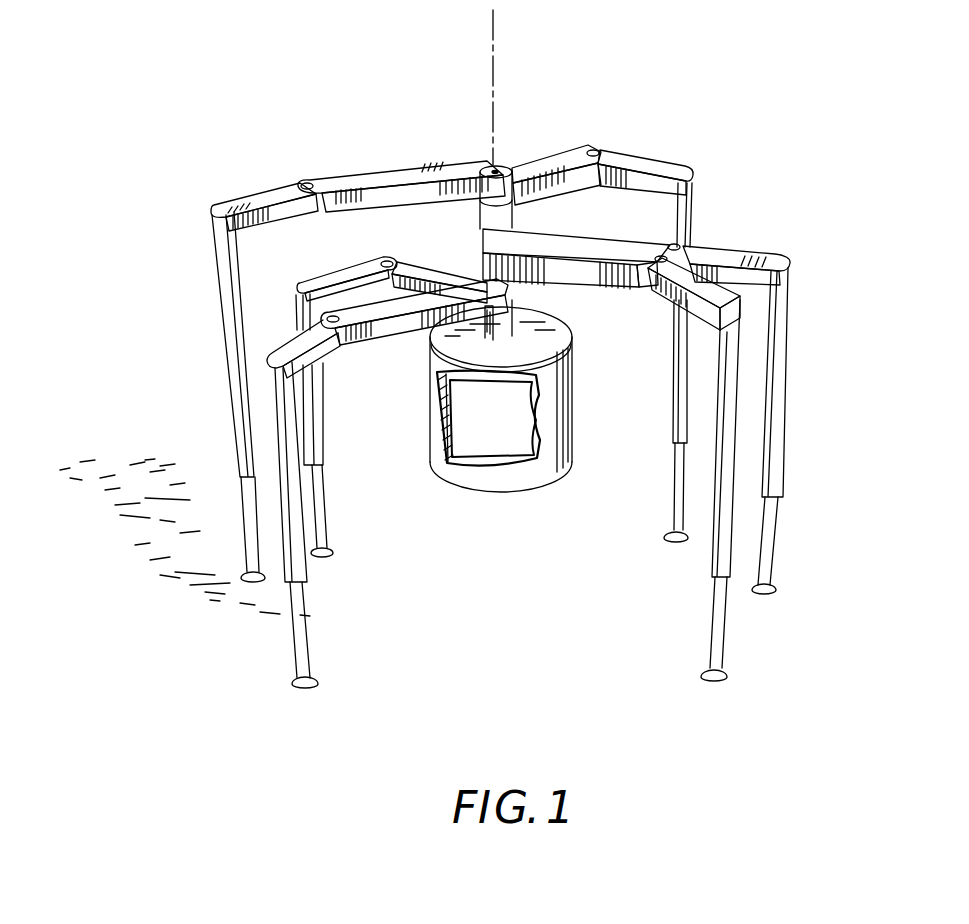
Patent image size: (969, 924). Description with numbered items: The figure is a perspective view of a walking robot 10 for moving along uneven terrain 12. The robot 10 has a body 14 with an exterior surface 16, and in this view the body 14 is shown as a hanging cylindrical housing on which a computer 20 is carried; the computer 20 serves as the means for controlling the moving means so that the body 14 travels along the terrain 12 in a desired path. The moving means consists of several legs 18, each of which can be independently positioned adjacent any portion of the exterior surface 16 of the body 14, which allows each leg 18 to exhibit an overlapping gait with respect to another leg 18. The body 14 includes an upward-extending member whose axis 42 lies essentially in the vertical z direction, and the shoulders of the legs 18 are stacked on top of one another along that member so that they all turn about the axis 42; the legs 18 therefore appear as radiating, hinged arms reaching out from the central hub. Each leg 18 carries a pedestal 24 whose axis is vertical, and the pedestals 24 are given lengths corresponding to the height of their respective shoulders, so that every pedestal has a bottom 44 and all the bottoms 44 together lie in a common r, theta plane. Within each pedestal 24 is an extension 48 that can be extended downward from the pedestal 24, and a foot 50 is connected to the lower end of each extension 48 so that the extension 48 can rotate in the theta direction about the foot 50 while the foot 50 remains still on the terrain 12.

The robot 10 is at (703, 117).
The terrain 12 is at (140, 480).
The body 14 is at (430, 462).
The exterior surface 16 is at (545, 481).
The legs 18 is at (428, 166).
The computer 20 is at (532, 398).
The pedestal 24 is at (233, 428).
The axis 42 is at (494, 105).
The bottom 44 is at (240, 479).
The extension 48 is at (247, 554).
The foot 50 is at (333, 552).